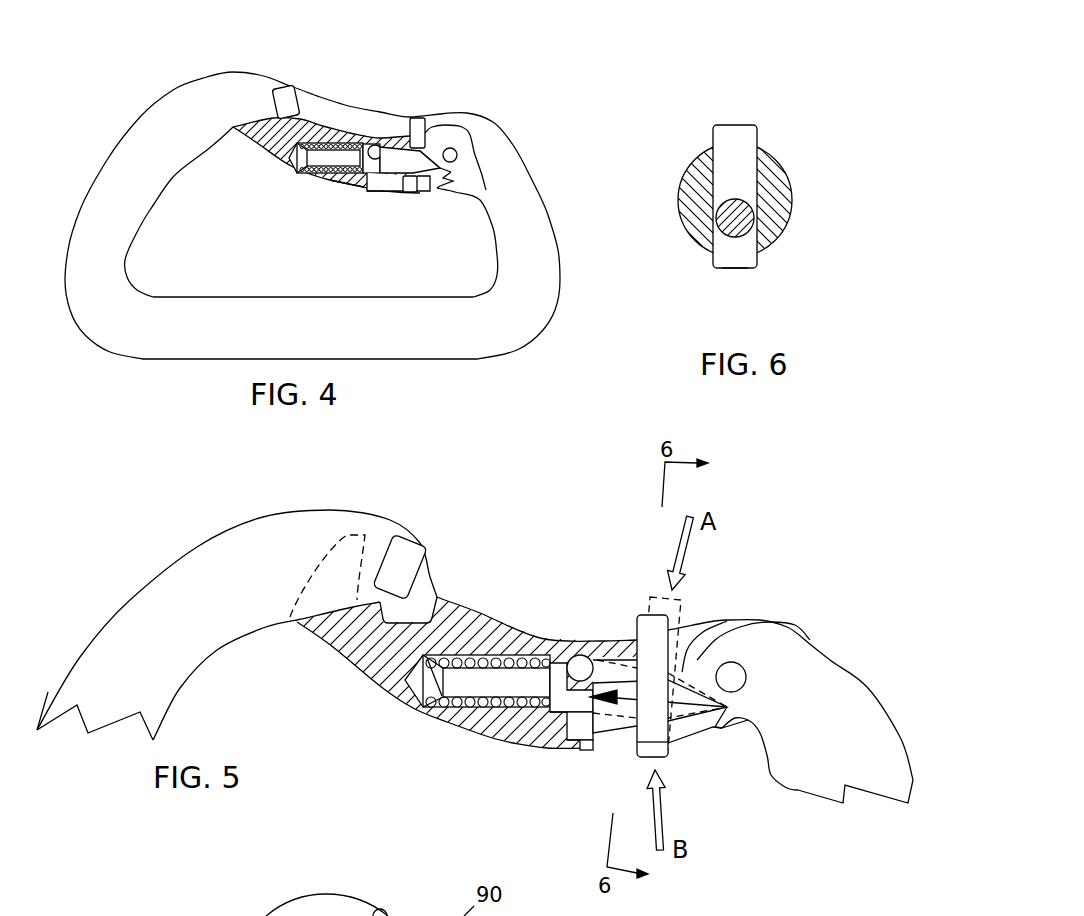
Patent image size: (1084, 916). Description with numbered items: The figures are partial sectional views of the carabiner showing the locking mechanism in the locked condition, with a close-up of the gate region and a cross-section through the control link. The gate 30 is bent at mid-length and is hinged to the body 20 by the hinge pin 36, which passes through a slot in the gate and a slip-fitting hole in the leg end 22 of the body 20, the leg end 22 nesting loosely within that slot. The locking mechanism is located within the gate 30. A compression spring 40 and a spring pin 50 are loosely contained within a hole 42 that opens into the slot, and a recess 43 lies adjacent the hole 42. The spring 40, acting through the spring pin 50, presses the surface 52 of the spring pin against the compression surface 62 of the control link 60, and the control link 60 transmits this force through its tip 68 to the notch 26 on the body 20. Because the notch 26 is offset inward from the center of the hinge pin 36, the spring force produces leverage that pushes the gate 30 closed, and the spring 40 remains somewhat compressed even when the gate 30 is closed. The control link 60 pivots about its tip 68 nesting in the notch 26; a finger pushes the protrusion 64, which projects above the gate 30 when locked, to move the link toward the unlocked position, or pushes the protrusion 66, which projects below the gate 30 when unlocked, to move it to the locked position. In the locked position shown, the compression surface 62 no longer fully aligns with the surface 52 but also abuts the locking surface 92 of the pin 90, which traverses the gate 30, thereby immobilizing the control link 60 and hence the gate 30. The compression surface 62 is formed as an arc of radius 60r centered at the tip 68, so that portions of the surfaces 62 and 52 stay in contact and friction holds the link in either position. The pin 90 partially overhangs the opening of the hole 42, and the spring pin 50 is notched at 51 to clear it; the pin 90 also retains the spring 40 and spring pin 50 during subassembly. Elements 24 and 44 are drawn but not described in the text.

In FIG. 4, the body 20 is at (150, 147).
In FIG. 5, the body 20 is at (153, 615).
In FIG. 5, the leg end 22 is at (688, 647).
In FIG. 4, the release button 24 is at (286, 88).
In FIG. 5, the release button 24 is at (404, 553).
In FIG. 4, the notch 26 is at (468, 186).
In FIG. 5, the notch 26 is at (760, 735).
In FIG. 4, the gate 30 is at (290, 150).
In FIG. 6, the gate 30 is at (783, 172).
In FIG. 5, the gate 30 is at (353, 645).
In FIG. 4, the hinge pin 36 is at (454, 152).
In FIG. 5, the hinge pin 36 is at (735, 674).
In FIG. 4, the compression spring 40 is at (327, 166).
In FIG. 5, the compression spring 40 is at (423, 708).
In FIG. 4, the hole 42 is at (318, 143).
In FIG. 5, the hole 42 is at (452, 710).
In FIG. 4, the recess 43 is at (375, 194).
In FIG. 5, the recess 43 is at (580, 741).
In FIG. 4, the bore 44 is at (255, 157).
In FIG. 5, the bore 44 is at (397, 688).
In FIG. 4, the spring pin 50 is at (318, 166).
In FIG. 5, the spring pin 50 is at (476, 700).
In FIG. 5, the notch 51 is at (533, 656).
In FIG. 4, the surface 52 is at (345, 182).
In FIG. 5, the surface 52 is at (560, 713).
In FIG. 4, the control link 60 is at (403, 175).
In FIG. 5, the control link 60 is at (623, 715).
In FIG. 5, the radius 60r is at (673, 712).
In FIG. 4, the compression surface 62 is at (403, 151).
In FIG. 5, the compression surface 62 is at (613, 675).
In FIG. 4, the protrusion 64 is at (425, 120).
In FIG. 6, the protrusion 64 is at (733, 124).
In FIG. 5, the protrusion 64 is at (655, 616).
In FIG. 4, the protrusion 66 is at (410, 193).
In FIG. 6, the protrusion 66 is at (733, 269).
In FIG. 5, the protrusion 66 is at (647, 759).
In FIG. 4, the tip 68 is at (434, 182).
In FIG. 5, the tip 68 is at (710, 728).
In FIG. 4, the pin 90 is at (373, 144).
In FIG. 5, the pin 90 is at (567, 660).
In FIG. 4, the locking surface 92 is at (376, 146).
In FIG. 5, the locking surface 92 is at (582, 655).